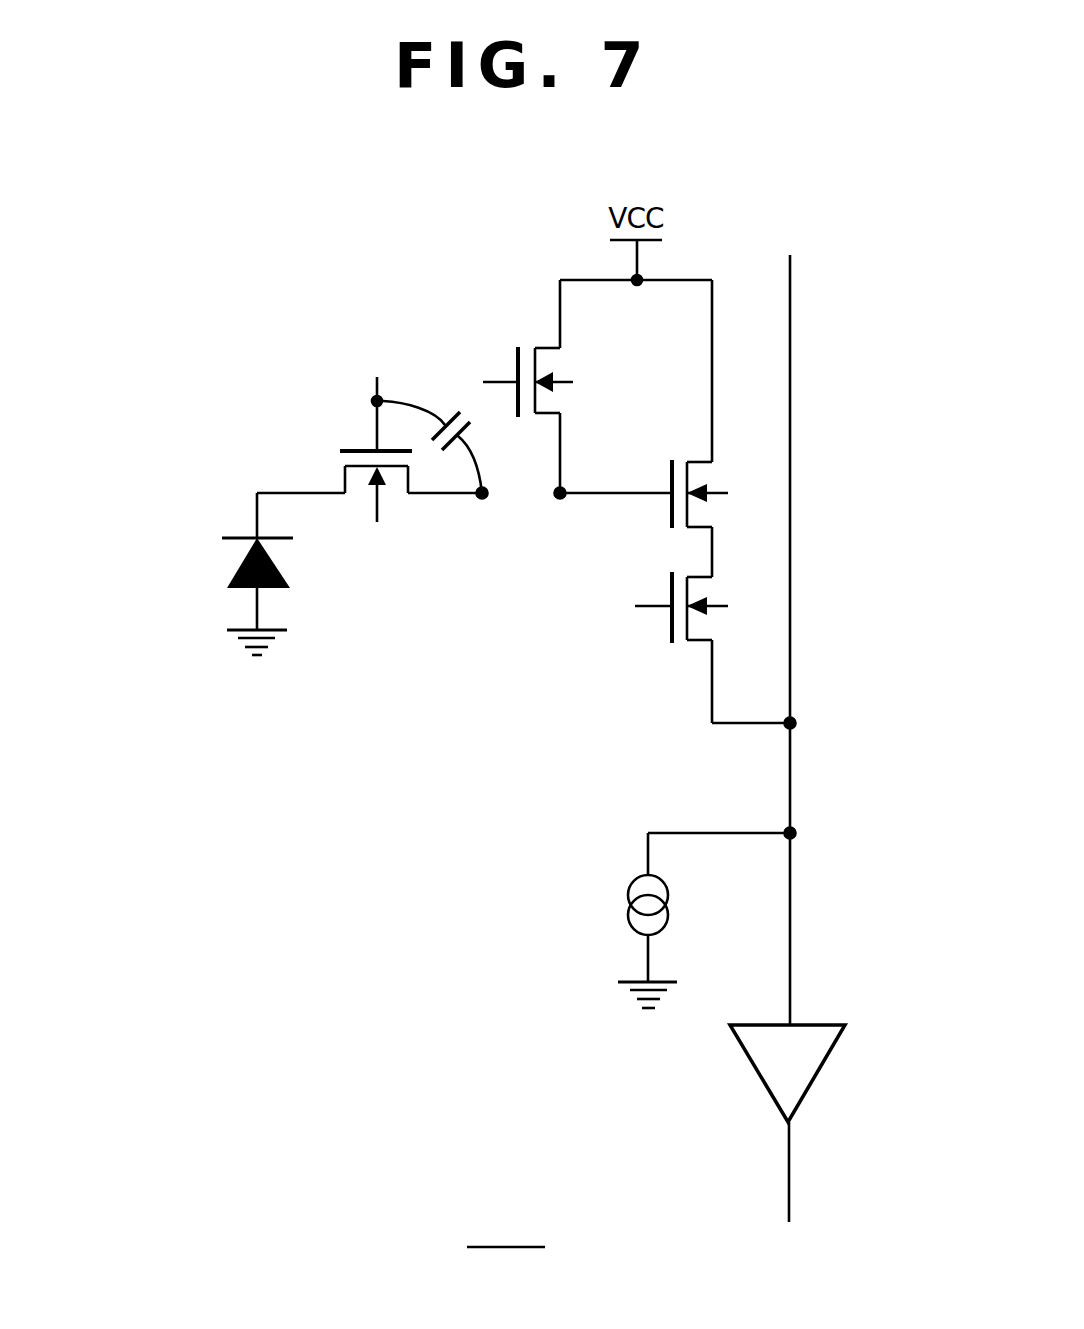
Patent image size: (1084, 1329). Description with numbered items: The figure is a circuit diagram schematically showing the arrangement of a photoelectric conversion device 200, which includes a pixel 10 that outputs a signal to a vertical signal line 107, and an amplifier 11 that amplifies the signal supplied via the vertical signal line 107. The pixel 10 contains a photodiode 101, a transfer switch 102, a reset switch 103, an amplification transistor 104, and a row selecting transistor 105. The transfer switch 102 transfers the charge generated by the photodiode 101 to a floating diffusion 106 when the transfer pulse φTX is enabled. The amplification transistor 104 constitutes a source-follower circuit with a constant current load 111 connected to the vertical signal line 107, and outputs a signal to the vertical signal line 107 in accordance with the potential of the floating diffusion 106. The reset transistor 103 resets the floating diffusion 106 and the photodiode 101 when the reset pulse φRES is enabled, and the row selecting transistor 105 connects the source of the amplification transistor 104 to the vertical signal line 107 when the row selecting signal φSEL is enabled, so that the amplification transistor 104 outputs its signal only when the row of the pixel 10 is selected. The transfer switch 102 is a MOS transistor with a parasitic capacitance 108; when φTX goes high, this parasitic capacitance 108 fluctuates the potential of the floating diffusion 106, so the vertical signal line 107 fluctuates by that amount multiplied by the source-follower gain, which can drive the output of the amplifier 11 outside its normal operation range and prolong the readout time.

The pixel 10 is at (362, 790).
The amplifier 11 is at (815, 1075).
The photodiode 101 is at (237, 567).
The transfer switch 102 is at (338, 465).
The reset switch 103 is at (538, 345).
The amplification transistor 104 is at (688, 457).
The row selecting transistor 105 is at (685, 645).
The floating diffusion 106 is at (559, 499).
The vertical signal line 107 is at (790, 557).
The parasitic capacitance 108 is at (450, 458).
The constant current load 111 is at (628, 898).
The photoelectric conversion device 200 is at (506, 1229).